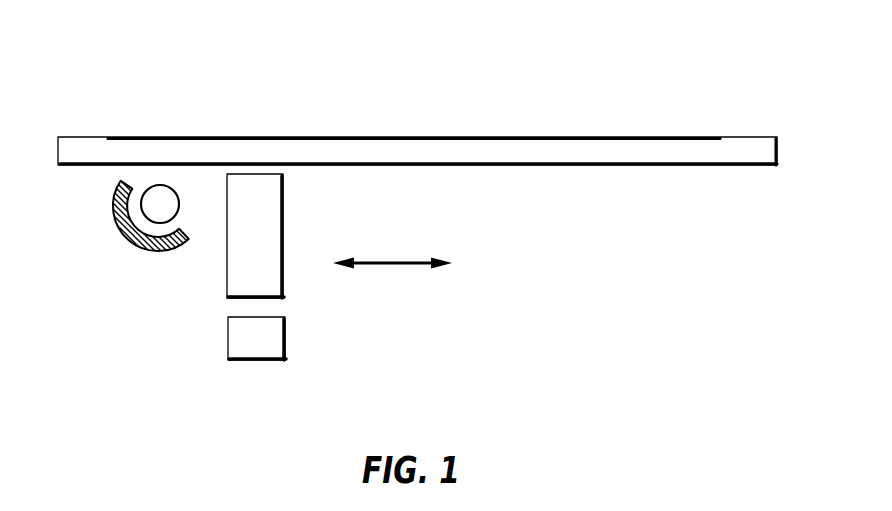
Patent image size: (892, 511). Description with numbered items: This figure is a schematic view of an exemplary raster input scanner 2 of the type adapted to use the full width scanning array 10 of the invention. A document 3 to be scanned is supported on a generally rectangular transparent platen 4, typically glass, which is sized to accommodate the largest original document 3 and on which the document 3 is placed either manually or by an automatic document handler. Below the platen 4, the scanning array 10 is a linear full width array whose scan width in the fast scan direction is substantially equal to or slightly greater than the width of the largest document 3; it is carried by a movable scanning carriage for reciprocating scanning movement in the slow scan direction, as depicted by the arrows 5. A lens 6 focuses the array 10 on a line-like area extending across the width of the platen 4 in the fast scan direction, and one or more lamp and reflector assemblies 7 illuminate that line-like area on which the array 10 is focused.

The raster input scanner 2 is at (206, 111).
The document 3 is at (447, 137).
The transparent platen 4 is at (632, 150).
The arrows 5 is at (395, 265).
The lens 6 is at (280, 218).
The lamp and reflector assembly 7 is at (122, 222).
The scanning array 10 is at (206, 346).